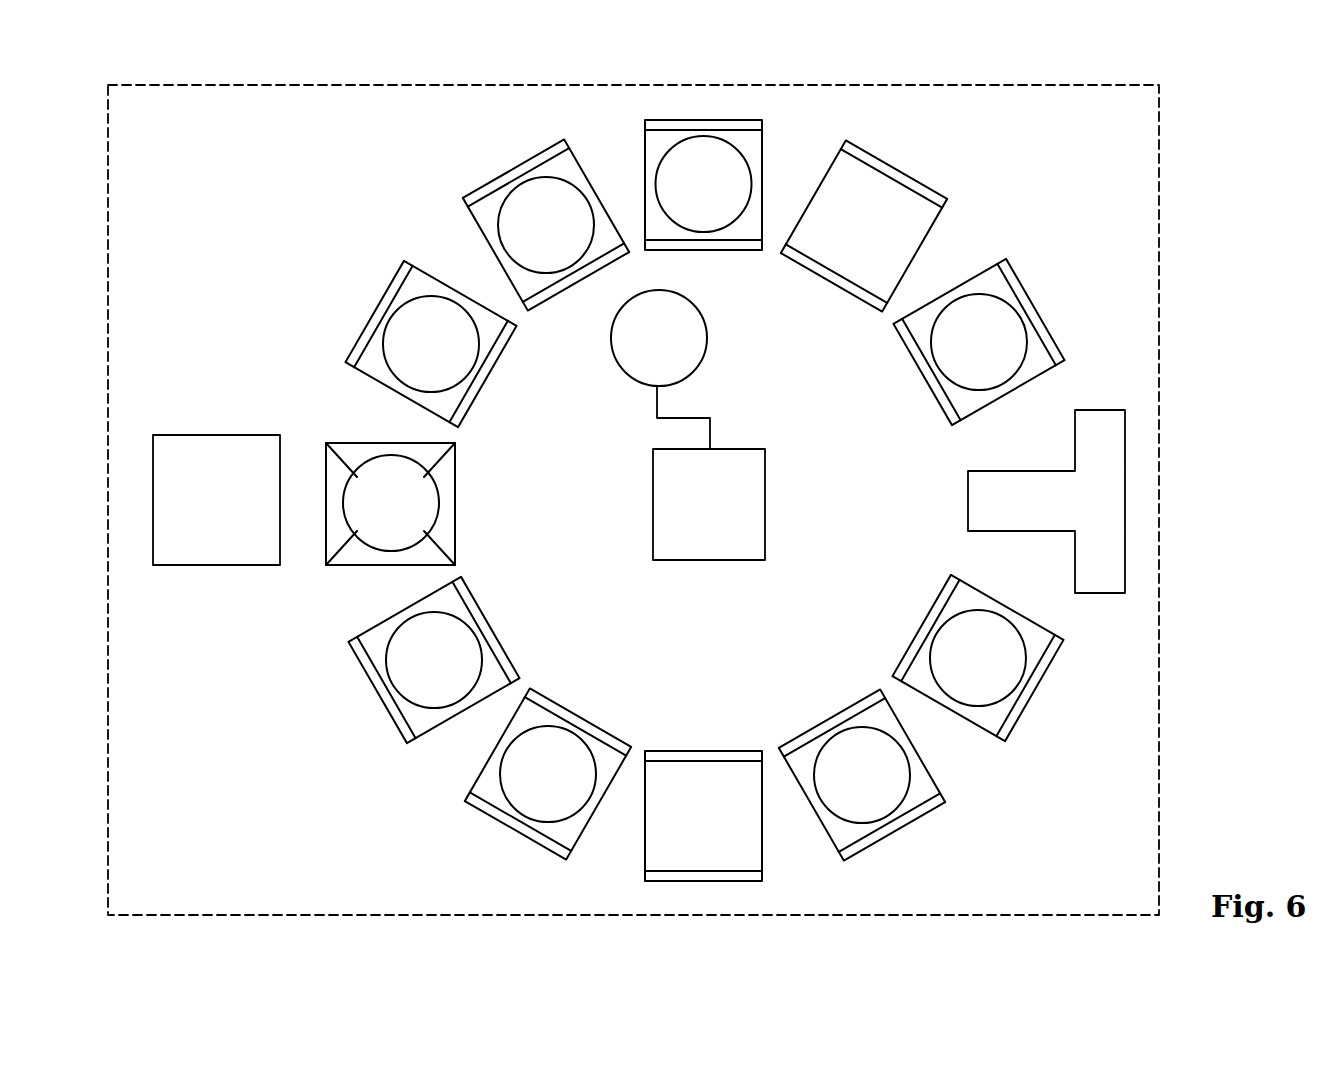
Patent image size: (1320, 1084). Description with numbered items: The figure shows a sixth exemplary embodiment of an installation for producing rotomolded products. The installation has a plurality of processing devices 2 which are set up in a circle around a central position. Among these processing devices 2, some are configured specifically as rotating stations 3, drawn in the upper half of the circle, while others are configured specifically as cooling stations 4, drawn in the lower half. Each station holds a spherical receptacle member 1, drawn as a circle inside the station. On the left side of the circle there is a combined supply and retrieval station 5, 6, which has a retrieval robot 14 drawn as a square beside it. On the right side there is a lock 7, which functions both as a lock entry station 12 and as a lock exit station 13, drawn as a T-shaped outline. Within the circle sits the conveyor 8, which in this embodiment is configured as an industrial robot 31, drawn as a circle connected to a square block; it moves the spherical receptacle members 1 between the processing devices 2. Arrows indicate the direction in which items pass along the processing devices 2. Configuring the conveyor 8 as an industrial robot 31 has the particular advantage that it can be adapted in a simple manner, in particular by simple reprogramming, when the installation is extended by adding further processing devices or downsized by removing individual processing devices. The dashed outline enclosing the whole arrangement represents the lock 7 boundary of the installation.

The spherical receptacle member 1 is at (696, 197).
The processing device 2 is at (696, 100).
The rotating station 3 is at (750, 143).
The cooling station 4 is at (488, 777).
The supply station 5 is at (362, 450).
The retrieval station 6 is at (361, 463).
The lock 7 is at (1196, 391).
The conveyor 8 is at (852, 536).
The lock entry station 12 is at (1126, 501).
The lock exit station 13 is at (1108, 492).
The retrieval robot 14 is at (197, 540).
The industrial robot 31 is at (620, 485).